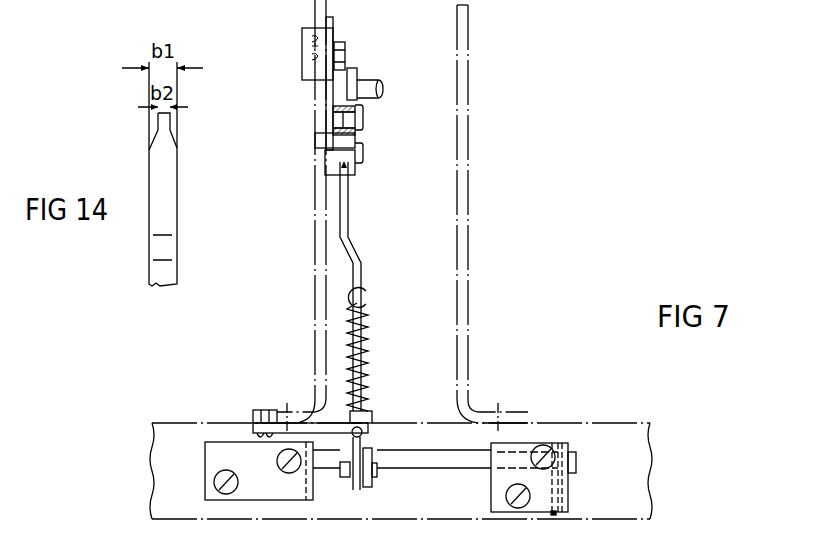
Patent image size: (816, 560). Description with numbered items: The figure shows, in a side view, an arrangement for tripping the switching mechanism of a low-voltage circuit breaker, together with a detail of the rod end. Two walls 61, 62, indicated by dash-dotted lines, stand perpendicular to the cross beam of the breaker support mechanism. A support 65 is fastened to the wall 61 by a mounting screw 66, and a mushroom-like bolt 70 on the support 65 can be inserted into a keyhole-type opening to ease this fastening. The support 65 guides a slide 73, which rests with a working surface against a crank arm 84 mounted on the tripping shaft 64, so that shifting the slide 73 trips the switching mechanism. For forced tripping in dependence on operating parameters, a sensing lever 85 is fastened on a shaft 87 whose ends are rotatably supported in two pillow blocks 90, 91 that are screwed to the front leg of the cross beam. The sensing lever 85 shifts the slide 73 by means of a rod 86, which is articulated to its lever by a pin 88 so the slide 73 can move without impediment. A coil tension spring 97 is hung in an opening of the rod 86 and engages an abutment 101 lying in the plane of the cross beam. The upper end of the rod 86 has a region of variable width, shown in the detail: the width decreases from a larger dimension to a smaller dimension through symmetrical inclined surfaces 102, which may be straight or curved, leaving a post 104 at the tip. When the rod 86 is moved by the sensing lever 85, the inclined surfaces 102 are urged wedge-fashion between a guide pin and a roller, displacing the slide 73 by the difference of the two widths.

In FIG. 7, the wall 61 is at (318, 333).
In FIG. 7, the wall 62 is at (470, 333).
In FIG. 7, the tripping shaft 64 is at (383, 89).
In FIG. 7, the support 65 is at (302, 62).
In FIG. 7, the mounting screw 66 is at (345, 46).
In FIG. 7, the mushroom-like bolt 70 is at (302, 38).
In FIG. 7, the slide 73 is at (356, 172).
In FIG. 7, the crank arm 84 is at (355, 72).
In FIG. 7, the sensing lever 85 is at (613, 517).
In FIG. 14, the rod 86 is at (219, 222).
In FIG. 7, the rod 86 is at (394, 224).
In FIG. 7, the shaft 87 is at (412, 466).
In FIG. 7, the pin 88 is at (353, 478).
In FIG. 7, the pillow block 90 is at (215, 460).
In FIG. 7, the pillow block 91 is at (500, 481).
In FIG. 7, the coil tension spring 97 is at (366, 360).
In FIG. 7, the abutment 101 is at (253, 426).
In FIG. 14, the inclined surfaces 102 is at (152, 137).
In FIG. 14, the post 104 is at (162, 122).